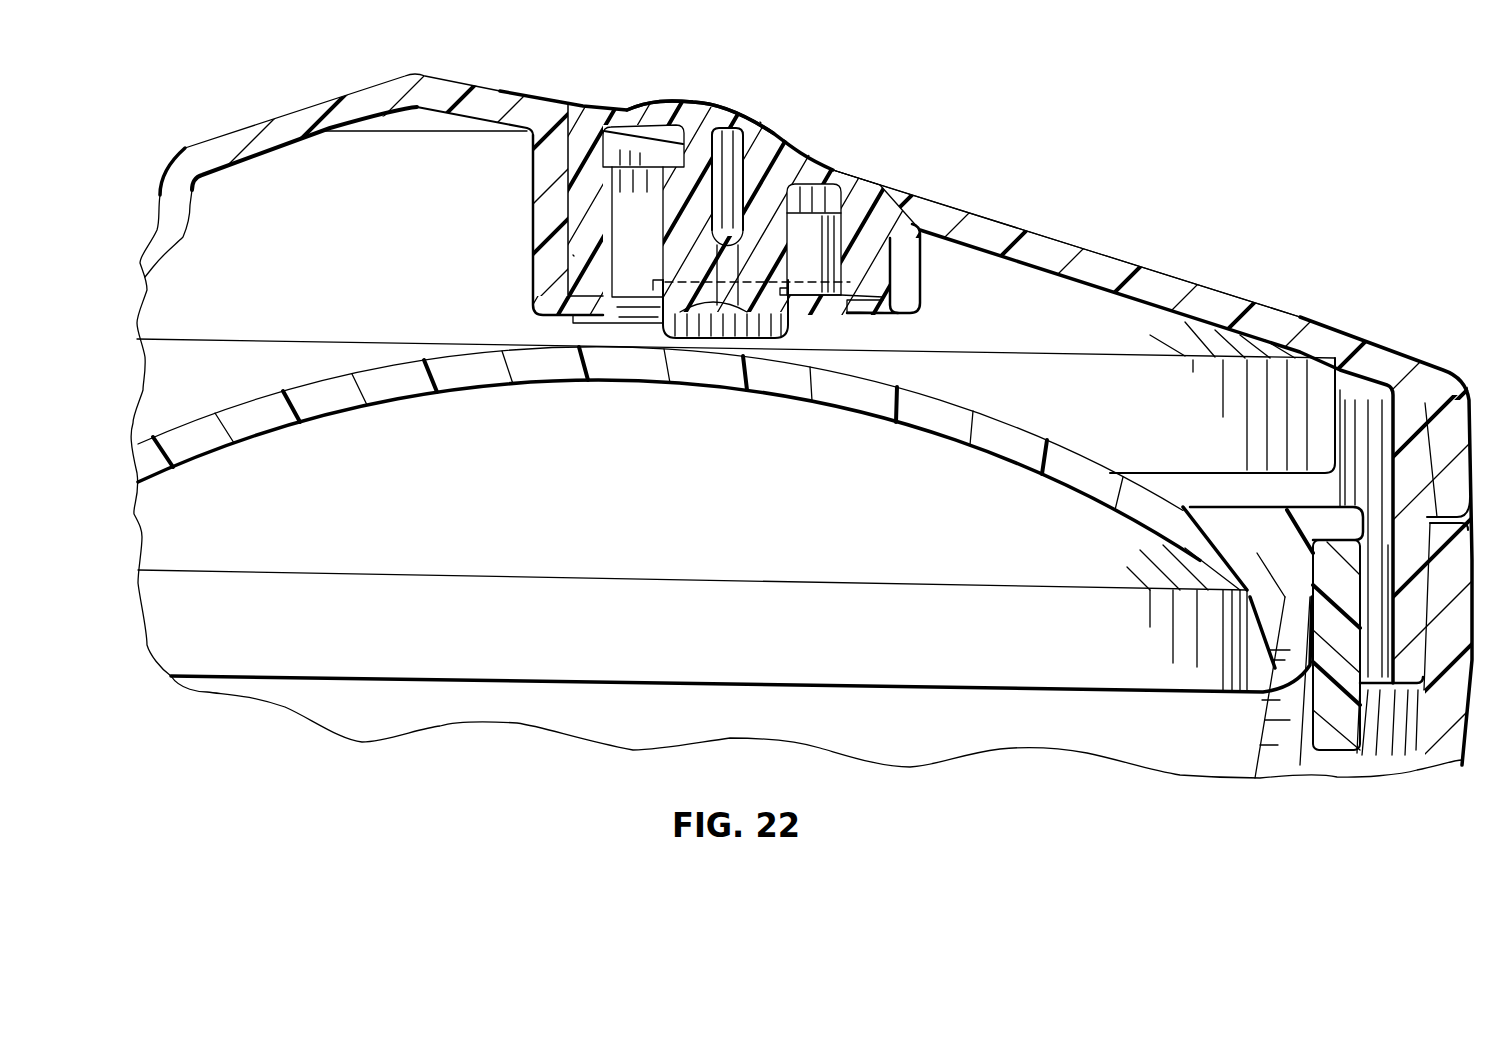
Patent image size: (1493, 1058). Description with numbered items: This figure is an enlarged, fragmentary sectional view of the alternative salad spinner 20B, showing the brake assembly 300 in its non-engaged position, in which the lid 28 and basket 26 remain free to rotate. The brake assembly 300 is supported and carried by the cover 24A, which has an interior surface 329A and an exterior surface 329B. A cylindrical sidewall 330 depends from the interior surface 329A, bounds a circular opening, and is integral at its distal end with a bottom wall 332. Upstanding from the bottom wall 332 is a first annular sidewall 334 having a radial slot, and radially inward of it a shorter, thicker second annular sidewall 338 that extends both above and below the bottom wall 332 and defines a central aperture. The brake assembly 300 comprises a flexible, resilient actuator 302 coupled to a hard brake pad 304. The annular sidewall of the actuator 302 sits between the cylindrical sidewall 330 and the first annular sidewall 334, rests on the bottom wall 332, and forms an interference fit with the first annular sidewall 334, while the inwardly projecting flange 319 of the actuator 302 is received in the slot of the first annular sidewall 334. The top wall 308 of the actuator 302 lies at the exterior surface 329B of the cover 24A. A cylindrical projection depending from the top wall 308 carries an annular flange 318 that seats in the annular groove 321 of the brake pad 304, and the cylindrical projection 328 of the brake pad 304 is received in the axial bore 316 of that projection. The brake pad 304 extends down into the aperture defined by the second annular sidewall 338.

The salad spinner 20B is at (1469, 749).
The cover 24A is at (1197, 262).
The basket 26 is at (1291, 770).
The lid 28 is at (1047, 417).
The brake assembly 300 is at (645, 106).
The actuator 302 is at (806, 131).
The brake pad 304 is at (727, 303).
The top wall 308 is at (760, 122).
The axial bore 316 is at (723, 110).
The annular flange 318 is at (783, 221).
The flange 319 is at (887, 184).
The annular groove 321 is at (643, 175).
The cylindrical projection 328 is at (677, 223).
The interior surface 329A is at (1047, 266).
The exterior surface 329B is at (1120, 221).
The cylindrical sidewall 330 is at (533, 287).
The bottom wall 332 is at (853, 320).
The first annular sidewall 334 is at (600, 257).
The second annular sidewall 338 is at (660, 282).